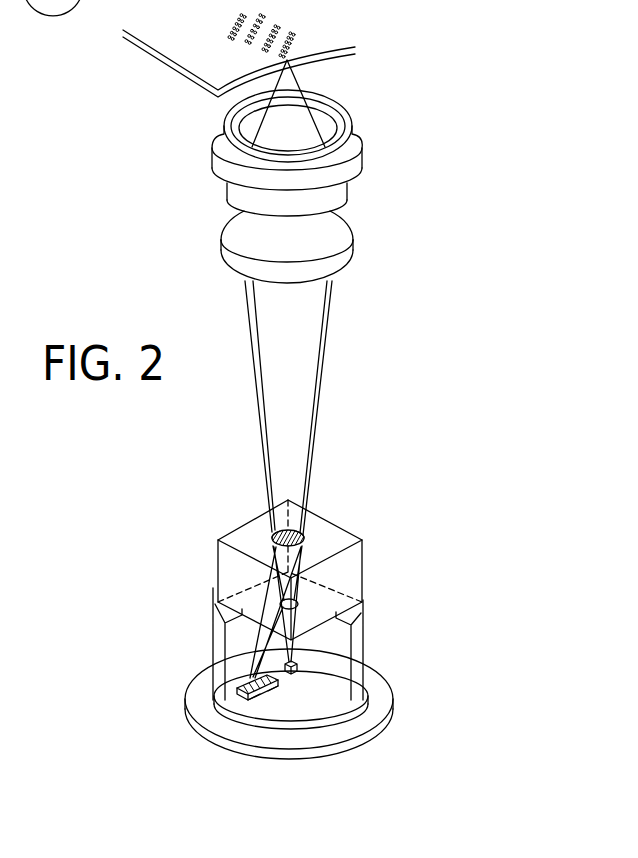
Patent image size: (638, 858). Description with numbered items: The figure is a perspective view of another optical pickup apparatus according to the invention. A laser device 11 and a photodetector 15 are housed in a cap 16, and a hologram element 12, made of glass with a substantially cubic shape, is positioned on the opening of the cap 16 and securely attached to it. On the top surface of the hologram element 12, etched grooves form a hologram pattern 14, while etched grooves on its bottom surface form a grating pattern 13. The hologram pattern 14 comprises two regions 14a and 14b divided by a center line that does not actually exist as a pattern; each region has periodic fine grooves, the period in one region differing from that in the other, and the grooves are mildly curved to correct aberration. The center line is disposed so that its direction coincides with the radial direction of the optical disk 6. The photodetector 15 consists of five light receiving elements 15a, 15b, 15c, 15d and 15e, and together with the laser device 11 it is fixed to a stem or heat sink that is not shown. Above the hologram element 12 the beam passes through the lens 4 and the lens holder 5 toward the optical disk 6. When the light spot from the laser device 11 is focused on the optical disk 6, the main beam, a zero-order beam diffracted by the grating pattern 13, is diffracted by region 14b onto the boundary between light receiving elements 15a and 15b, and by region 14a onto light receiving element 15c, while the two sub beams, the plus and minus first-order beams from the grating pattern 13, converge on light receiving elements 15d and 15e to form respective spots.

The lens 4 is at (353, 248).
The lens holder 5 is at (363, 153).
The optical disk 6 is at (188, 55).
The laser device 11 is at (297, 673).
The hologram element 12 is at (362, 578).
The grating pattern 13 is at (298, 604).
The hologram pattern 14 is at (305, 540).
The region 14a is at (300, 537).
The region 14b is at (280, 527).
The photodetector 15 is at (317, 708).
The light receiving element 15a is at (242, 694).
The light receiving element 15b is at (237, 690).
The light receiving element 15c is at (282, 686).
The light receiving element 15d is at (253, 697).
The light receiving element 15e is at (248, 677).
The cap 16 is at (373, 703).